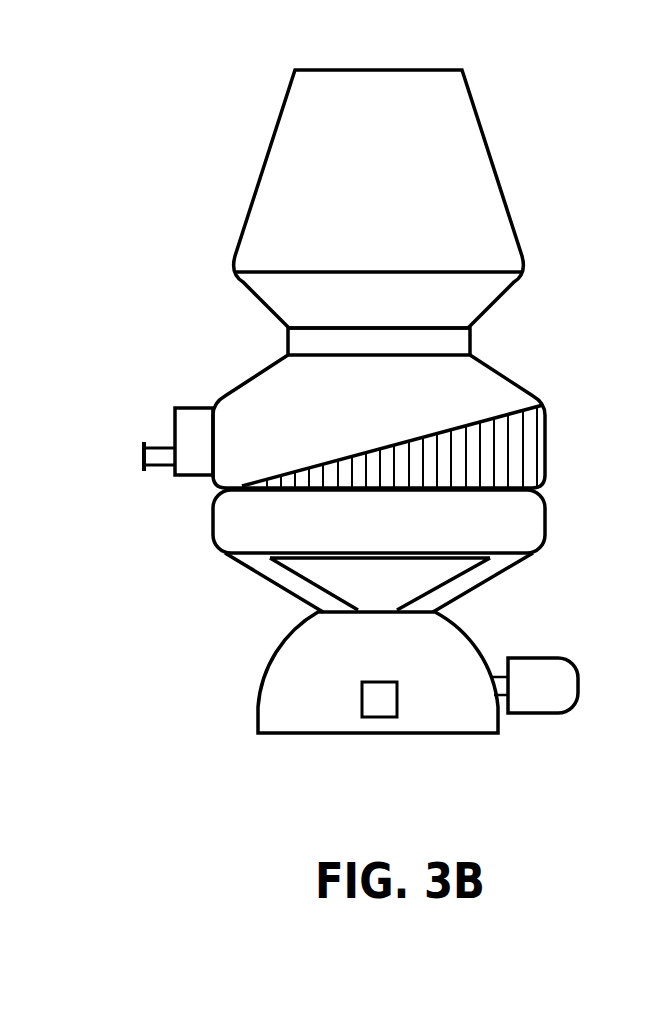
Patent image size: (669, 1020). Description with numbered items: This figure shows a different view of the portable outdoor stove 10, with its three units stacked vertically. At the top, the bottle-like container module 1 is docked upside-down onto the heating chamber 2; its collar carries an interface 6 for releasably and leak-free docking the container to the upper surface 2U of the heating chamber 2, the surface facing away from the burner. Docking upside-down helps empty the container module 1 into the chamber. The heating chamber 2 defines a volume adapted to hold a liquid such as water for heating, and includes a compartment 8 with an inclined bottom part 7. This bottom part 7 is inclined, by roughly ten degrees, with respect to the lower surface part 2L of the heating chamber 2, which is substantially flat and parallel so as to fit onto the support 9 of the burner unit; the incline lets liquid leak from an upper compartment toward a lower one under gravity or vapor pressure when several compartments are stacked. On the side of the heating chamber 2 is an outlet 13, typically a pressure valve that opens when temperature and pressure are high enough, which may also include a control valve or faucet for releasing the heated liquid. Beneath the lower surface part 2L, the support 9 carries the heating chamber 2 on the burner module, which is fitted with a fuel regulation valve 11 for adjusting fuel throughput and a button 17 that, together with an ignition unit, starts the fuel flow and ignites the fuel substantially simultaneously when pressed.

The portable outdoor stove 10 is at (258, 46).
The container module 1 is at (483, 130).
The interface 6 is at (470, 341).
The heating chamber 2 is at (396, 402).
The upper surface 2U is at (355, 402).
The compartment 8 is at (268, 365).
The inclined bottom part 7 is at (538, 458).
The lower surface part 2L is at (493, 488).
The outlet 13 is at (141, 456).
The support 9 is at (490, 572).
The button 17 is at (385, 717).
The fuel regulation valve 11 is at (573, 682).